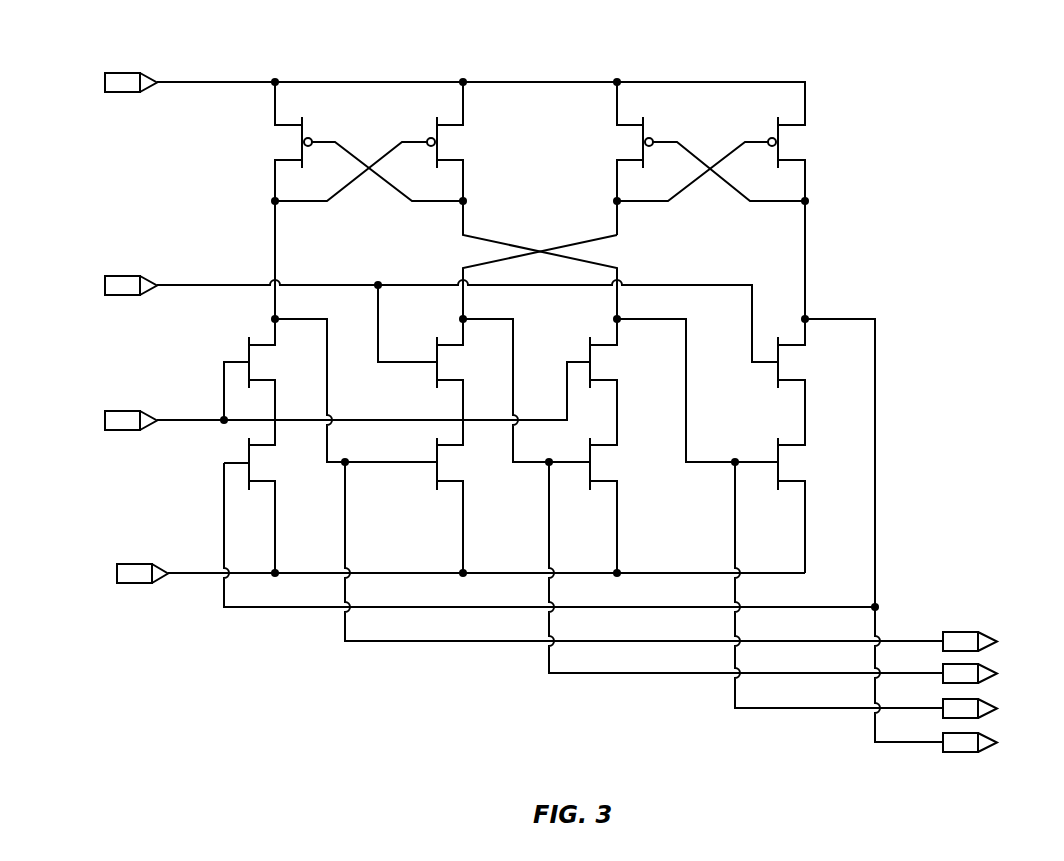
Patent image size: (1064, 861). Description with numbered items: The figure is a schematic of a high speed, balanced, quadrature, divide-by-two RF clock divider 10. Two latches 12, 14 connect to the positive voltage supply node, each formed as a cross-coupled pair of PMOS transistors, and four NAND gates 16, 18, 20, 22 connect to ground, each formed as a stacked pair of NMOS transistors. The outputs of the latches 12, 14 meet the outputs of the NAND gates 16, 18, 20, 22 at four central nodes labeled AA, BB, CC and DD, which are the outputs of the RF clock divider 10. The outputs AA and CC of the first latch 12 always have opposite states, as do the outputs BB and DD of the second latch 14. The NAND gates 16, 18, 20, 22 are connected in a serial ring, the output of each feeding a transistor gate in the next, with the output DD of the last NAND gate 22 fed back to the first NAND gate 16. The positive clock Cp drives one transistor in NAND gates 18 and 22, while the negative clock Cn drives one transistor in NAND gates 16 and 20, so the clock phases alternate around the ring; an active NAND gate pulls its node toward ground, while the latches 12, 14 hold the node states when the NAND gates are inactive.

The RF clock divider 10 is at (738, 46).
The first latch 12 is at (358, 231).
The second latch 14 is at (728, 237).
The NAND gate 16 is at (296, 496).
The NAND gate 18 is at (488, 499).
The NAND gate 20 is at (643, 499).
The NAND gate 22 is at (712, 494).